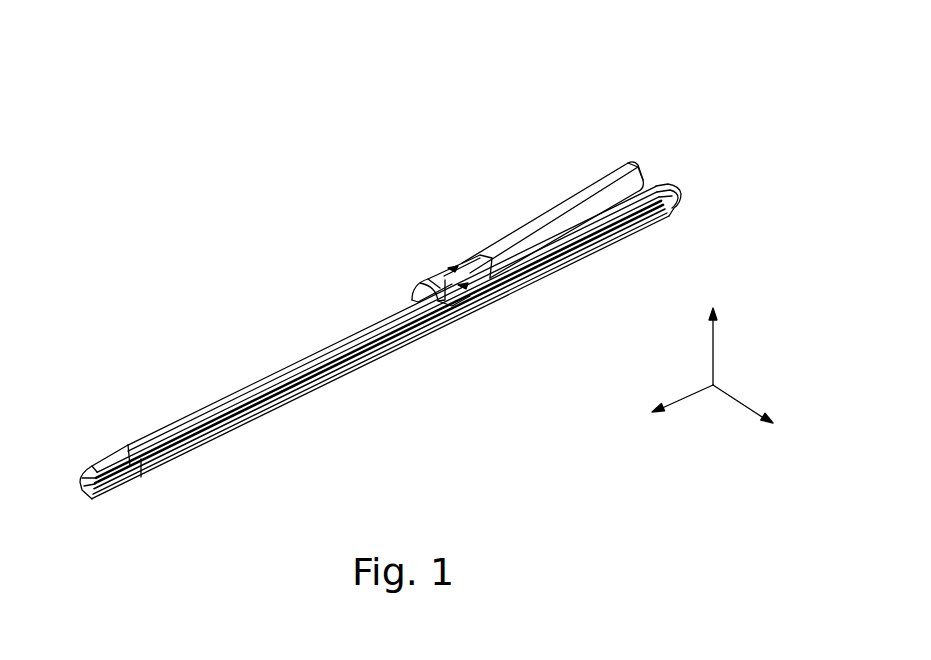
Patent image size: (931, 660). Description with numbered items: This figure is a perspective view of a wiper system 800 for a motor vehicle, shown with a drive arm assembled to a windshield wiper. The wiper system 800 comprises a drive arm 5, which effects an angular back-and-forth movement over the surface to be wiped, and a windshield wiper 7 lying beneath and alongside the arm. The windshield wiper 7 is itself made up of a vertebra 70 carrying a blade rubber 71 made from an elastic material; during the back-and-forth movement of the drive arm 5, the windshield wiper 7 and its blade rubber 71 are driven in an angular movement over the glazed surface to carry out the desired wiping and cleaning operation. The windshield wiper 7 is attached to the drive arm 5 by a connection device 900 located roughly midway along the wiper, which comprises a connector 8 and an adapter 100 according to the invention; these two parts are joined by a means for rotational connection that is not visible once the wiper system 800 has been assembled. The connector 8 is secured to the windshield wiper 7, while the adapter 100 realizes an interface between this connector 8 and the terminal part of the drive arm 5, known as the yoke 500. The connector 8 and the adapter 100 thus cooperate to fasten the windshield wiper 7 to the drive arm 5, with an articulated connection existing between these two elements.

The wiper system 800 is at (213, 181).
The windshield wiper 7 is at (239, 366).
The vertebra 70 is at (173, 426).
The blade rubber 71 is at (310, 389).
The connection device 900 is at (419, 273).
The adapter 100 is at (411, 292).
The yoke 500 is at (447, 272).
The connector 8 is at (437, 308).
The drive arm 5 is at (550, 196).